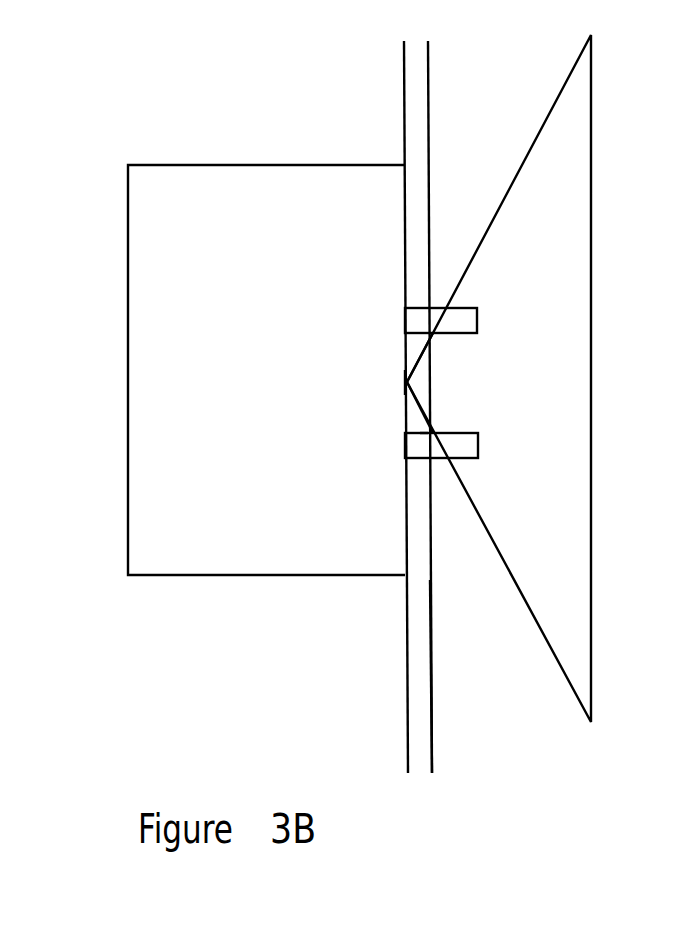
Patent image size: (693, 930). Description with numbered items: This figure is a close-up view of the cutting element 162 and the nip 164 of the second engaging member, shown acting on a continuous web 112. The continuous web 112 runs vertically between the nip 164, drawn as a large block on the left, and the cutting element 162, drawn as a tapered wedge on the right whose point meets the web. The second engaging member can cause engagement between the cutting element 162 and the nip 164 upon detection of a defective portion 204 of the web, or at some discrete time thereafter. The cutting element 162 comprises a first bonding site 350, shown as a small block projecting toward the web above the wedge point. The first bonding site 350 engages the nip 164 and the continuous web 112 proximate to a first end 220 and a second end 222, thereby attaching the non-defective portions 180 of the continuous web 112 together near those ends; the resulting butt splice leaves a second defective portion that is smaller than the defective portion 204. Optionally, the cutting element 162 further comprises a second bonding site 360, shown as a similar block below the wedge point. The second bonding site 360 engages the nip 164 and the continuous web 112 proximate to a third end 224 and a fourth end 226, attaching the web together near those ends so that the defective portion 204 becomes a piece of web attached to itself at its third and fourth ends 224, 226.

The continuous web 112 is at (430, 97).
The non-defective portions 180 is at (436, 159).
The defective portion 204 is at (438, 598).
The nip 164 is at (148, 481).
The cutting element 162 is at (573, 177).
The first bonding site 350 is at (478, 318).
The second bonding site 360 is at (478, 447).
The first end 220 is at (420, 340).
The second end 222 is at (407, 382).
The fourth end 226 is at (407, 388).
The third end 224 is at (407, 435).